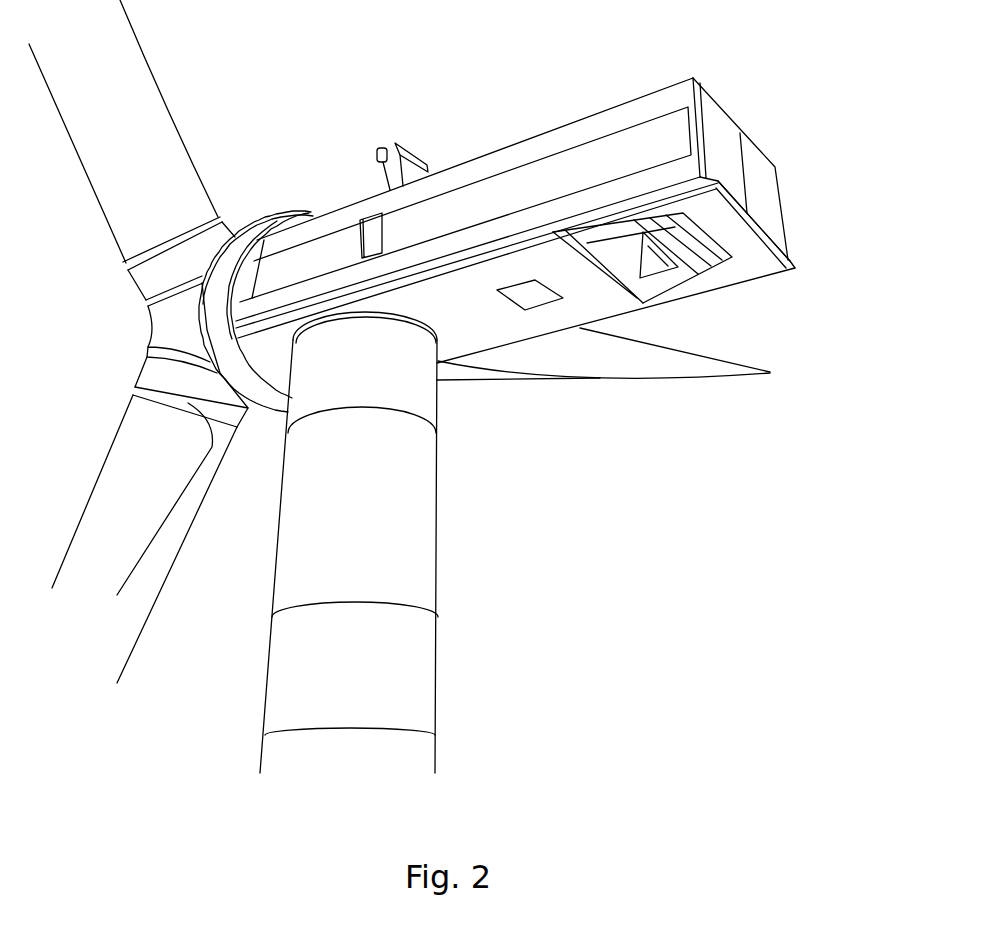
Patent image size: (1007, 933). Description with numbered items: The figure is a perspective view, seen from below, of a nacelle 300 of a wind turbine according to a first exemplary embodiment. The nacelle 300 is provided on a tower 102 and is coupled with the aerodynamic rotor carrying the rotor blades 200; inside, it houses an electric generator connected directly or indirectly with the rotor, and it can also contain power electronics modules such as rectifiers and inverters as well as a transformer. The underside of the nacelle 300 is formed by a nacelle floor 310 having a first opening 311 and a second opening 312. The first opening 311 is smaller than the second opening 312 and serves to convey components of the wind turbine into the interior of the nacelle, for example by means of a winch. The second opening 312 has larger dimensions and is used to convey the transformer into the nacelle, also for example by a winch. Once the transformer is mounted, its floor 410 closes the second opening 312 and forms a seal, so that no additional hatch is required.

The tower 102 is at (324, 758).
The rotor blades 200 is at (135, 130).
The nacelle 300 is at (753, 173).
The nacelle floor 310 is at (758, 265).
The first opening 311 is at (520, 293).
The second opening 312 is at (680, 265).
The floor of the transformer 410 is at (643, 275).